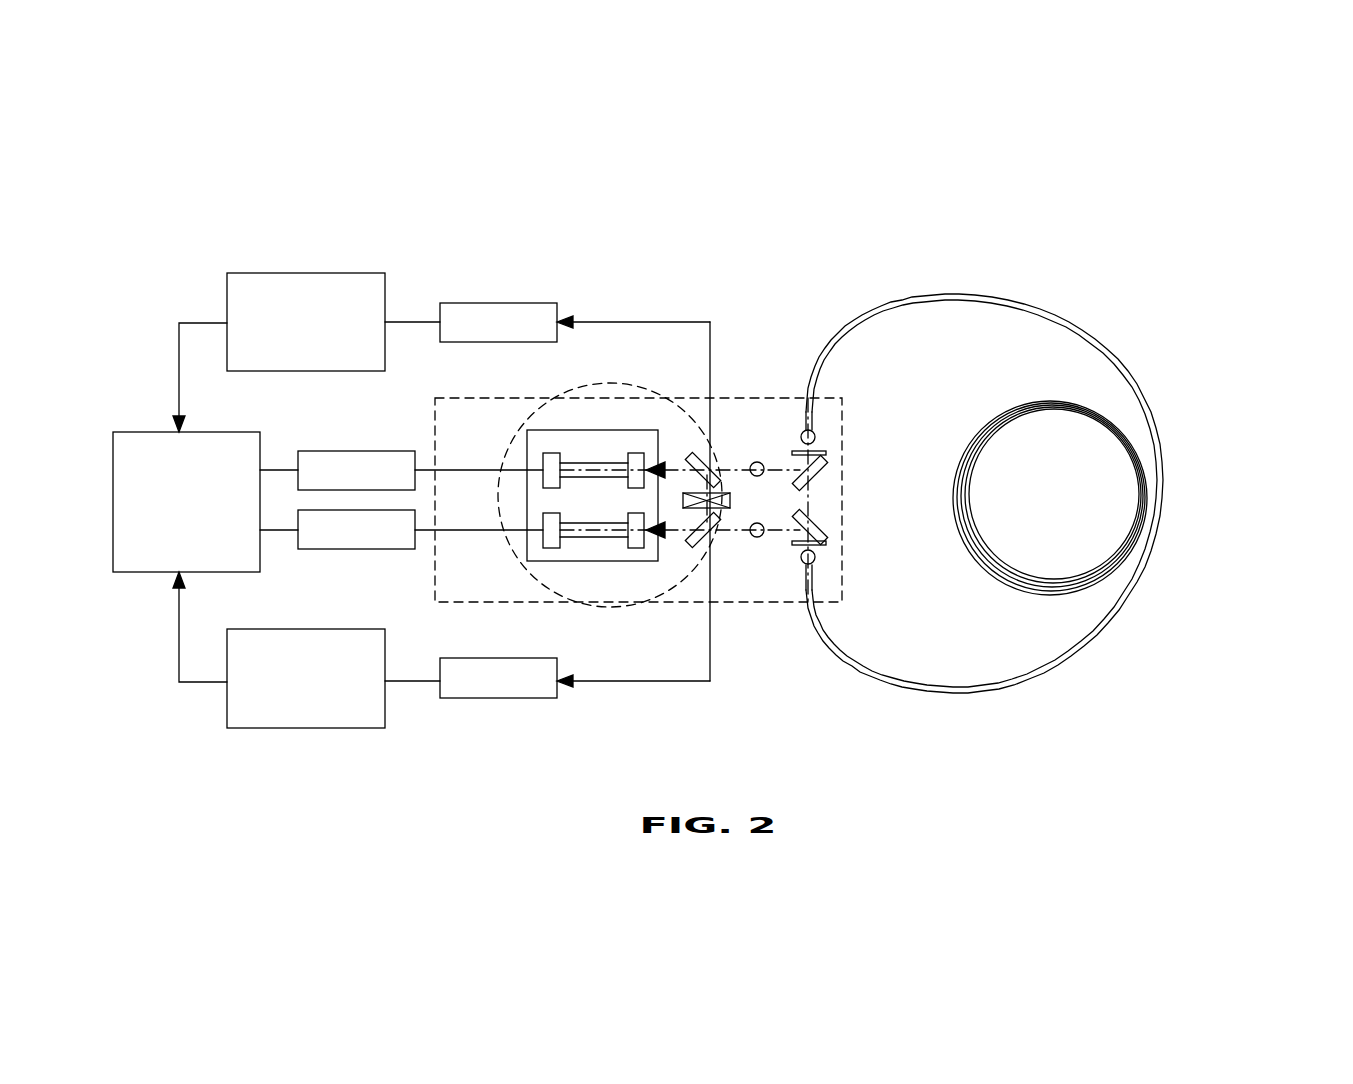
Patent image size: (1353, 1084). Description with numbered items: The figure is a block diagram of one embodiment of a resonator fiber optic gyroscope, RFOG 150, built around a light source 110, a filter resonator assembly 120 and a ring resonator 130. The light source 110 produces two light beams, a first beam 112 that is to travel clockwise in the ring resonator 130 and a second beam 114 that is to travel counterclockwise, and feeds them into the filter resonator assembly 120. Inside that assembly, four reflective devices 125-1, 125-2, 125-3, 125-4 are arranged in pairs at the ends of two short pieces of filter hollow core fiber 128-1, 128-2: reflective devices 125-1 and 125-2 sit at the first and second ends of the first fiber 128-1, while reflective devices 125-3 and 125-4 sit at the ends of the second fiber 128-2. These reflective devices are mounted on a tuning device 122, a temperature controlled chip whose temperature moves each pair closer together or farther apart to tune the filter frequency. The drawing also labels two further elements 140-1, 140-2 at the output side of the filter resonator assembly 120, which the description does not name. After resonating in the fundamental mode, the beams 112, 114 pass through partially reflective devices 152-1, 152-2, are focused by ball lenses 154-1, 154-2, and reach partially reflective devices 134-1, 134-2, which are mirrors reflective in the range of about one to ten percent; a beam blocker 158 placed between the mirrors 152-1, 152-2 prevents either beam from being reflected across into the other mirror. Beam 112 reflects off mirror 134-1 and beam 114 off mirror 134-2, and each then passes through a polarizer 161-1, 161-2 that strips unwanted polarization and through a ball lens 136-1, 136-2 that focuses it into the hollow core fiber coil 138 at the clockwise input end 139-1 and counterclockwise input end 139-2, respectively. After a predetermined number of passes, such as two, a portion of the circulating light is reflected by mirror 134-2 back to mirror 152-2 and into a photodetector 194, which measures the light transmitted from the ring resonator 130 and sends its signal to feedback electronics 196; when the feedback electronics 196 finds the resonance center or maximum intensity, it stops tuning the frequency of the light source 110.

The light source 110 is at (168, 527).
The first light beam 112 is at (400, 482).
The second light beam 114 is at (406, 543).
The filter resonator assembly 120 is at (652, 612).
The tuning device 122 is at (597, 548).
The reflective device 125-1 is at (545, 468).
The reflective device 125-2 is at (637, 452).
The reflective device 125-3 is at (550, 547).
The reflective device 125-4 is at (632, 515).
The first short piece of filter hollow core fiber 128-1 is at (577, 465).
The second short piece of filter hollow core fiber 128-2 is at (575, 540).
The ring resonator 130 is at (790, 215).
The partially reflective device 134-1 is at (822, 470).
The partially reflective device 134-2 is at (825, 528).
The ball lens 136-1 is at (815, 435).
The ball lens 136-2 is at (815, 560).
The hollow core fiber coil 138 is at (903, 296).
The clockwise input end 139-1 is at (815, 410).
The counterclockwise input end 139-2 is at (813, 578).
The light beam 140-1 is at (672, 460).
The light beam 140-2 is at (672, 540).
The RFOG 150 is at (1252, 267).
The partially reflective device 152-1 is at (700, 462).
The partially reflective device 152-2 is at (705, 548).
The ball lens 154-1 is at (754, 463).
The ball lens 154-2 is at (752, 536).
The beam blocker 158 is at (730, 500).
The polarizer 161-1 is at (825, 452).
The polarizer 161-2 is at (825, 545).
The photodetector 194 is at (537, 692).
The feedback electronics 196 is at (288, 715).